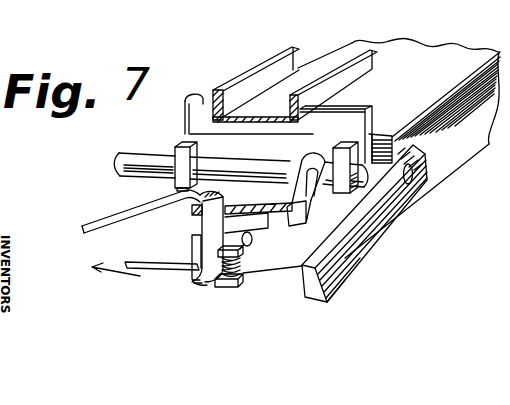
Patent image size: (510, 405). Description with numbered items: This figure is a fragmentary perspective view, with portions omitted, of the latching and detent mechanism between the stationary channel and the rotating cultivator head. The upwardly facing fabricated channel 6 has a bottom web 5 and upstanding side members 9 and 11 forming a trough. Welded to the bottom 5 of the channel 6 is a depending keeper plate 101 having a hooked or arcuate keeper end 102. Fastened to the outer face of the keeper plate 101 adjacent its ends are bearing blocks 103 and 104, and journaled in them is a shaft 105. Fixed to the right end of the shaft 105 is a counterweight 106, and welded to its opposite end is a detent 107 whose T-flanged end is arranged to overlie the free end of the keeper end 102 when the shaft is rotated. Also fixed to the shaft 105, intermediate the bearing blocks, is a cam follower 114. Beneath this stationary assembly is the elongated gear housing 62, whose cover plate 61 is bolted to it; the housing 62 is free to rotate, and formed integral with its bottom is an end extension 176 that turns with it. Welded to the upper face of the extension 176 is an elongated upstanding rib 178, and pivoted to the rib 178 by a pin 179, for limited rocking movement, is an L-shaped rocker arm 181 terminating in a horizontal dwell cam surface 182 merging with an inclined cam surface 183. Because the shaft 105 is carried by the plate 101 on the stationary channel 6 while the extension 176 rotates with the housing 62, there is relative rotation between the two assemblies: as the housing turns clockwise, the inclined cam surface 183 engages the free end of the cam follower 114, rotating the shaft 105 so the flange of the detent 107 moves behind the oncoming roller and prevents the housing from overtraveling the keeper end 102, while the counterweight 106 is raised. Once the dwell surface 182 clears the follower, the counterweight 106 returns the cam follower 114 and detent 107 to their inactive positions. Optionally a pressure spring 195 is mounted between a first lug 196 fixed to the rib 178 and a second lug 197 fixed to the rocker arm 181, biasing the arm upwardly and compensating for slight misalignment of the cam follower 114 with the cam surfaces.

The bottom web 5 is at (302, 78).
The fabricated channel 6 is at (241, 62).
The upstanding side member 9 is at (366, 68).
The upstanding side member 11 is at (281, 56).
The cover plate 61 is at (428, 52).
The gear housing 62 is at (462, 157).
The keeper plate 101 is at (370, 112).
The keeper end 102 is at (206, 87).
The bearing block 103 is at (199, 150).
The bearing block 104 is at (355, 148).
The shaft 105 is at (152, 173).
The counterweight 106 is at (368, 242).
The detent 107 is at (186, 108).
The cam follower 114 is at (307, 158).
The end extension 176 is at (153, 256).
The rib 178 is at (192, 277).
The pin 179 is at (256, 234).
The rocker arm 181 is at (190, 230).
The dwell cam surface 182 is at (218, 191).
The inclined cam surface 183 is at (115, 213).
The pressure spring 195 is at (246, 272).
The first lug 196 is at (235, 285).
The second lug 197 is at (244, 255).